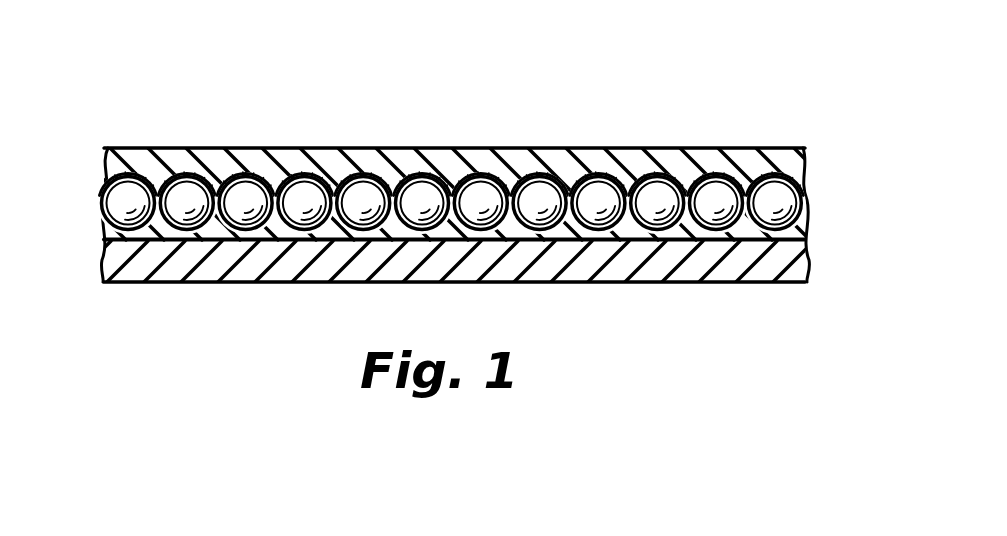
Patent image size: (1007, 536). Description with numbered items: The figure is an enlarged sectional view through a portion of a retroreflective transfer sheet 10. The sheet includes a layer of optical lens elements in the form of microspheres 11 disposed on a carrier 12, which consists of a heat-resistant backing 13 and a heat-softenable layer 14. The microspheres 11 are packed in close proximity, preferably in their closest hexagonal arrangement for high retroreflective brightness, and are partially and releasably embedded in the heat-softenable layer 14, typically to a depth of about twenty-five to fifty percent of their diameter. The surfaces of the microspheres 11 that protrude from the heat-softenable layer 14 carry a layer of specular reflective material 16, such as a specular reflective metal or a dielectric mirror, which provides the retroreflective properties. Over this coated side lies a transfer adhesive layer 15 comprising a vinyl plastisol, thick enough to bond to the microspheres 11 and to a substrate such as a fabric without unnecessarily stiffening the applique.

The retroreflective transfer sheet 10 is at (643, 81).
The microspheres 11 is at (355, 190).
The carrier 12 is at (816, 220).
The heat-resistant backing 13 is at (390, 272).
The heat-softenable layer 14 is at (104, 236).
The transfer adhesive layer 15 is at (110, 163).
The layer of specular reflective material 16 is at (808, 192).